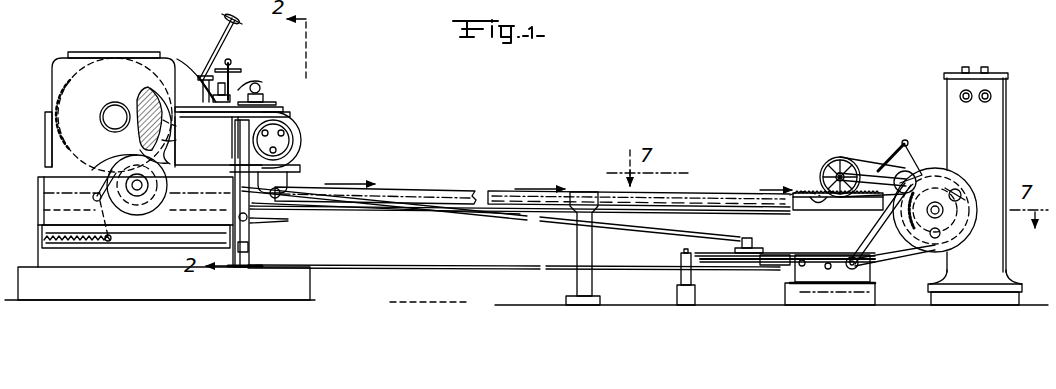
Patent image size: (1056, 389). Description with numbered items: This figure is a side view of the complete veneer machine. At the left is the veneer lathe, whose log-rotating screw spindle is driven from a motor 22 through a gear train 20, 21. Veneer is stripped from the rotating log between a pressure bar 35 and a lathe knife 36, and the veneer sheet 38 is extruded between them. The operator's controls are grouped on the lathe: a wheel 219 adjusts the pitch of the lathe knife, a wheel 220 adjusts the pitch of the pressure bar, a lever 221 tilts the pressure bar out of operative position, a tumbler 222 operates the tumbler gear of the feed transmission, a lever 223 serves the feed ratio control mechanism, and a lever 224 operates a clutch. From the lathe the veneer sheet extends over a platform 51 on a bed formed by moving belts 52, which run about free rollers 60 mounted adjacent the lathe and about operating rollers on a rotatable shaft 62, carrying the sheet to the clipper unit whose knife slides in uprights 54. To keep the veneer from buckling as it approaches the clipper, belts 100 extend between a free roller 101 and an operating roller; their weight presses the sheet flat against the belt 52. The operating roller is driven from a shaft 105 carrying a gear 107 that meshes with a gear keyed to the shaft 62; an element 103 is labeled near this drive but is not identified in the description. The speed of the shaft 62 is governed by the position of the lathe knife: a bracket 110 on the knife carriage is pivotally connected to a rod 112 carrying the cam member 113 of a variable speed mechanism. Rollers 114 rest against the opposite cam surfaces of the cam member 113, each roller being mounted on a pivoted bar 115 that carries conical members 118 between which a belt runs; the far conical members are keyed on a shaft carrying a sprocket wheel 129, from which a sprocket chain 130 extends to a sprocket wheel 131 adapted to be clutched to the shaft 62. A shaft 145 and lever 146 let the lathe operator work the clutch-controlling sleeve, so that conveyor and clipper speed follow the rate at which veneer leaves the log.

The gear train 20 is at (72, 109).
The gear train 21 is at (166, 193).
The motor 22 is at (120, 158).
The pressure bar 35 is at (164, 111).
The knife 36 is at (170, 142).
The veneer sheet 38 is at (170, 125).
The platform 51 is at (398, 186).
The moving belts 52 is at (800, 193).
The uprights 54 is at (985, 140).
The free rollers 60 is at (300, 182).
The rotatable shaft 62 is at (941, 214).
The belts 100 is at (862, 175).
The free roller 101 is at (838, 175).
The bar 103 is at (862, 163).
The shaft 105 is at (884, 140).
The gear 107 is at (921, 172).
The bracket 110 is at (292, 165).
The rod 112 is at (607, 230).
The cam member 113 is at (752, 244).
The rollers 114 is at (740, 253).
The bar 115 is at (790, 263).
The conical member 118 is at (808, 255).
The sprocket wheel 129 is at (860, 268).
The sprocket chain 130 is at (866, 231).
The sprocket wheel 131 is at (968, 192).
The shaft 145 is at (465, 269).
The lever 146 is at (255, 224).
The wheel 219 is at (200, 77).
The wheel 220 is at (241, 70).
The lever 221 is at (224, 24).
The tumbler 222 is at (184, 64).
The lever 223 is at (231, 62).
The lever 224 is at (270, 83).